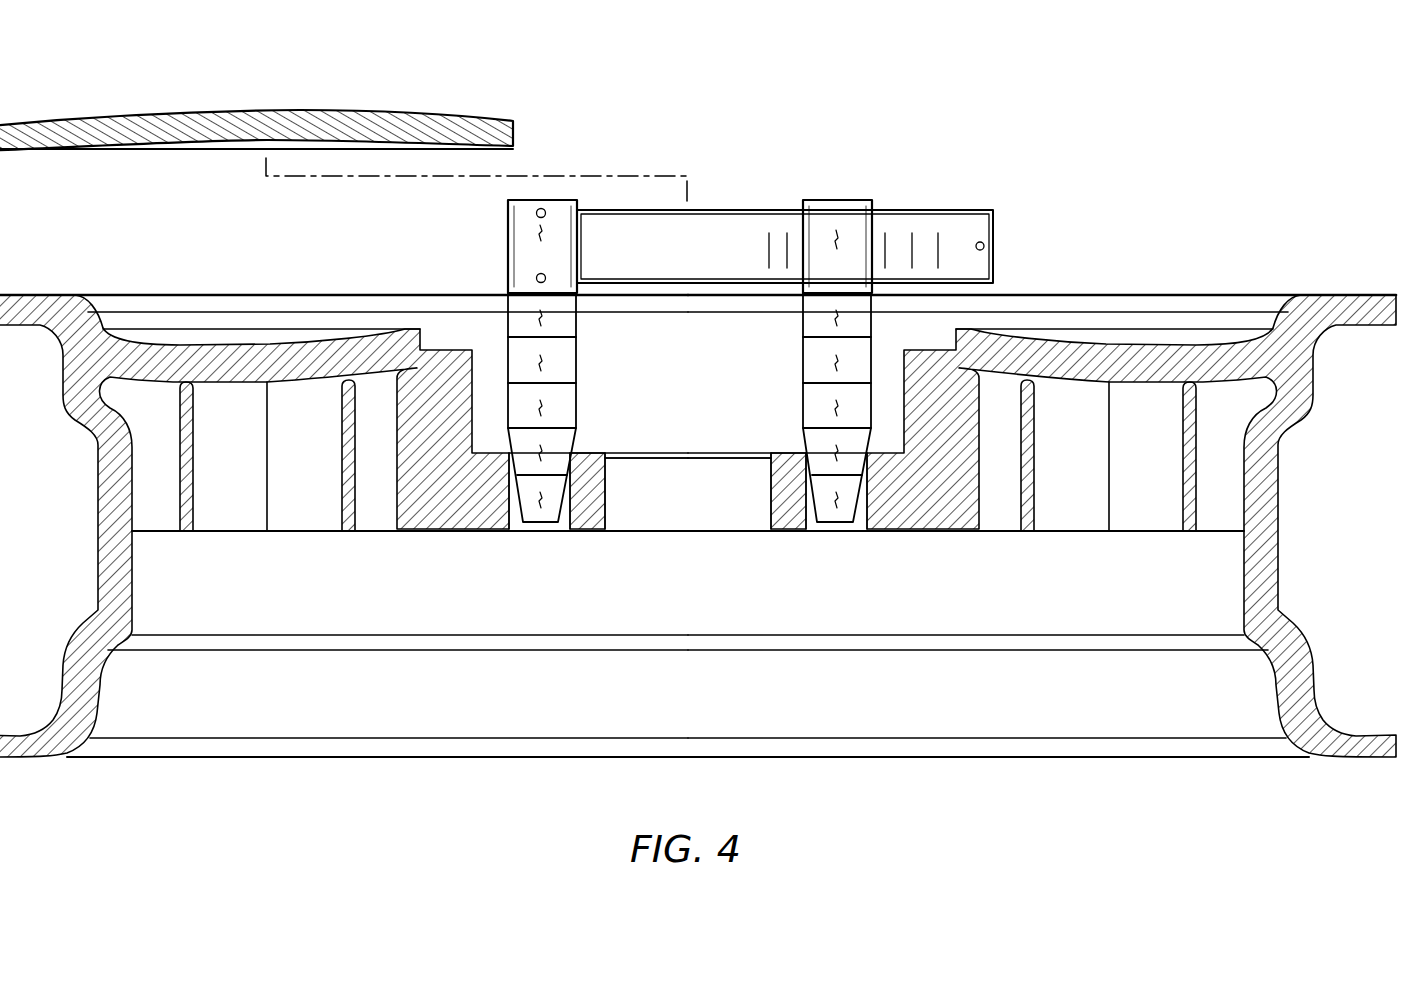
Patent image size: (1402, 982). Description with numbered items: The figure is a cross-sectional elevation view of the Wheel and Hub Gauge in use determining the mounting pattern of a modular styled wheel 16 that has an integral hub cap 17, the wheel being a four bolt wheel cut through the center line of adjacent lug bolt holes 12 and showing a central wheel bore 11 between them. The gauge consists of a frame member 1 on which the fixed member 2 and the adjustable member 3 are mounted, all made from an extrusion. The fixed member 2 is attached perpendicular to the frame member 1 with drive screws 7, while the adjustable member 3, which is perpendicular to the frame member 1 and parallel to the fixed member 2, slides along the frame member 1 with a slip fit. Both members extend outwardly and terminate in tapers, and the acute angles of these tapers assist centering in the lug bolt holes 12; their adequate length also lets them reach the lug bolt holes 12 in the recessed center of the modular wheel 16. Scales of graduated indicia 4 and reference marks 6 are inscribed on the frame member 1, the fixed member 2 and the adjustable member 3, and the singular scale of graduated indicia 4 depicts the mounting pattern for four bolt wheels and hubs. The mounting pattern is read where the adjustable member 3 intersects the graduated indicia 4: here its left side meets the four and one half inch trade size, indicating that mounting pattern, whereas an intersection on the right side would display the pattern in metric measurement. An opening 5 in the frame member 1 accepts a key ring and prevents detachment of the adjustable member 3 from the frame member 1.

The frame member 1 is at (750, 211).
The fixed member 2 is at (509, 210).
The adjustable member 3 is at (847, 202).
The graduated indicia 4 is at (940, 232).
The opening 5 is at (986, 246).
The reference marks 6 is at (557, 383).
The drive screws 7 is at (537, 275).
The center bore 11 is at (685, 497).
The lug bolt holes 12 is at (536, 530).
The modular wheel 16 is at (272, 297).
The hub cap 17 is at (339, 109).